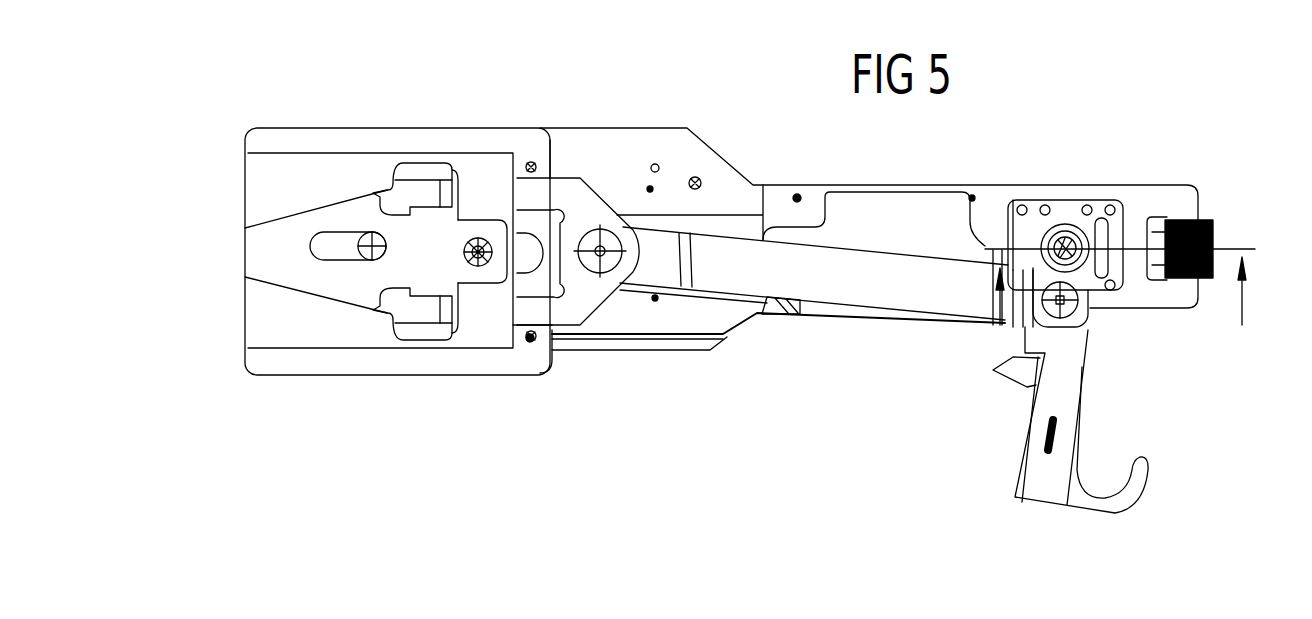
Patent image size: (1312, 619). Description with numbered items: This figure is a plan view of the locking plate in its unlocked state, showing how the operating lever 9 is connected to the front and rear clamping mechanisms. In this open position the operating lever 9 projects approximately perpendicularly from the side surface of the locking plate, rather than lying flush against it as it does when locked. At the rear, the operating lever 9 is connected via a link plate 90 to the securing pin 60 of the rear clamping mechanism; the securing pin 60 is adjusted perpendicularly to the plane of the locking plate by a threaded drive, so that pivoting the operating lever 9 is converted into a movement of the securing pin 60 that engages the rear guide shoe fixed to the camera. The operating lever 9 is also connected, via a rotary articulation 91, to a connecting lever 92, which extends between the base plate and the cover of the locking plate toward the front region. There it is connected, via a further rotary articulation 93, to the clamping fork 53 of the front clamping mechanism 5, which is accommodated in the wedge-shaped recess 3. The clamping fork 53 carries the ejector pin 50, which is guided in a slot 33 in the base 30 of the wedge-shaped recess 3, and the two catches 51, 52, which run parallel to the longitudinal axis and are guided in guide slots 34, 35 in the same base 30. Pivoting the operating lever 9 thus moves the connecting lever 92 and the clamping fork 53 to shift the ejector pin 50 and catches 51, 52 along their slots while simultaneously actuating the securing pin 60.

The wedge-shaped recess 3 is at (245, 265).
The front clamping mechanism 5 is at (425, 400).
The operating lever 9 is at (1035, 475).
The base 30 is at (273, 240).
The slot 33 is at (332, 250).
The guide slot 34 is at (405, 190).
The guide slot 35 is at (414, 312).
The ejector pin 50 is at (367, 240).
The catch 51 is at (457, 205).
The catch 52 is at (449, 325).
The clamping fork 53 is at (548, 195).
The securing pin 60 is at (1118, 208).
The link plate 90 is at (1082, 278).
The rotary articulation 91 is at (1080, 313).
The connecting lever 92 is at (910, 292).
The rotary articulation 93 is at (602, 262).